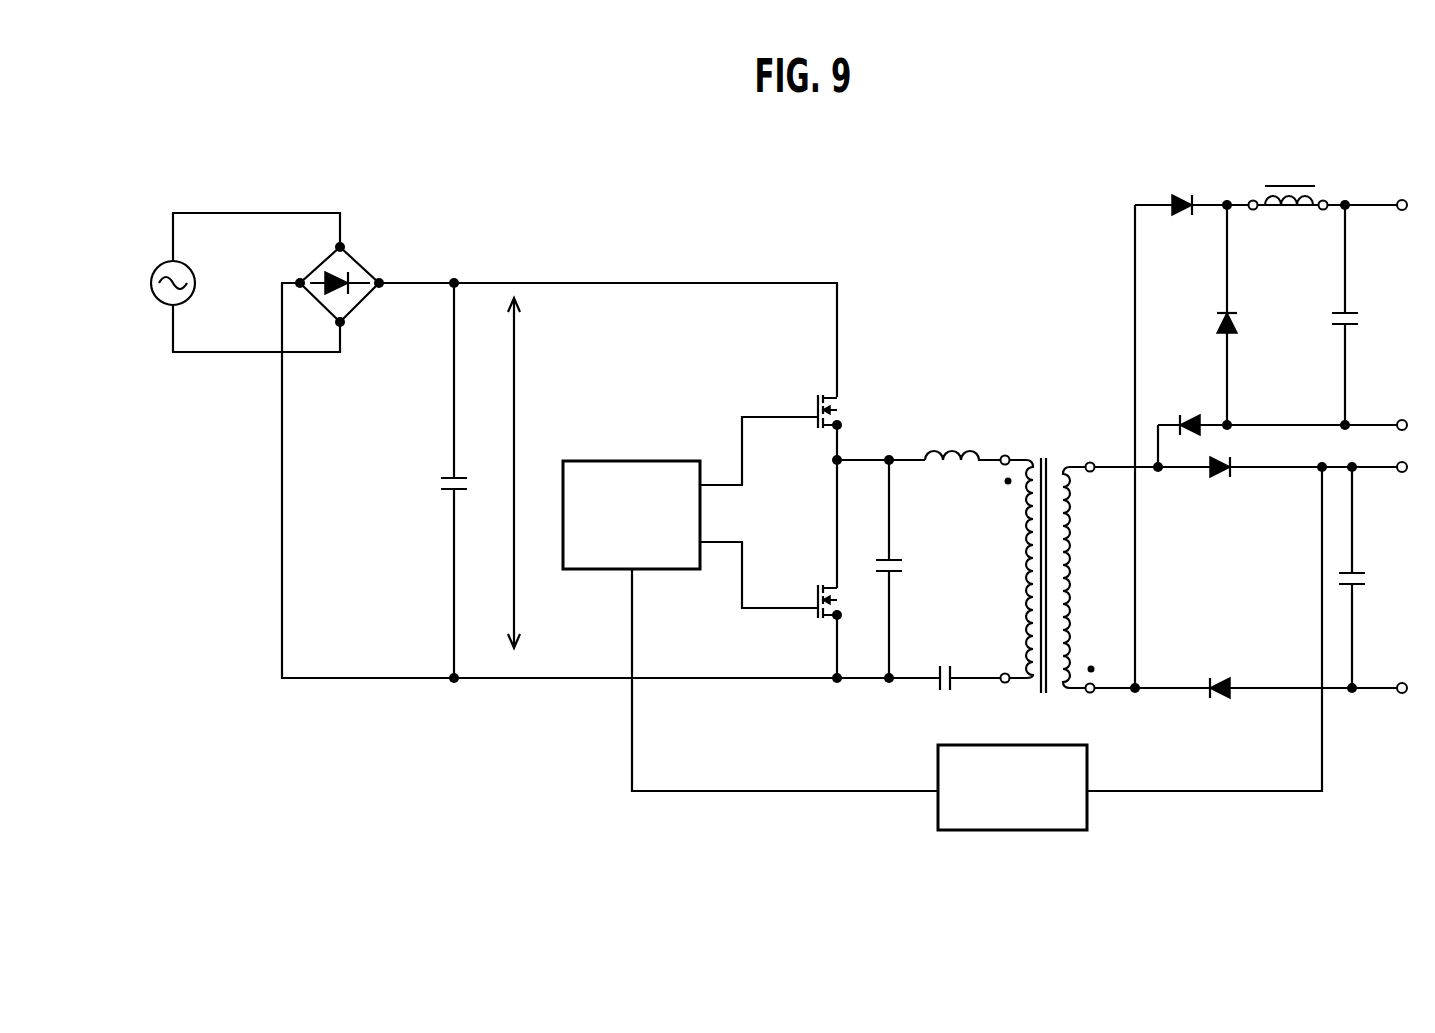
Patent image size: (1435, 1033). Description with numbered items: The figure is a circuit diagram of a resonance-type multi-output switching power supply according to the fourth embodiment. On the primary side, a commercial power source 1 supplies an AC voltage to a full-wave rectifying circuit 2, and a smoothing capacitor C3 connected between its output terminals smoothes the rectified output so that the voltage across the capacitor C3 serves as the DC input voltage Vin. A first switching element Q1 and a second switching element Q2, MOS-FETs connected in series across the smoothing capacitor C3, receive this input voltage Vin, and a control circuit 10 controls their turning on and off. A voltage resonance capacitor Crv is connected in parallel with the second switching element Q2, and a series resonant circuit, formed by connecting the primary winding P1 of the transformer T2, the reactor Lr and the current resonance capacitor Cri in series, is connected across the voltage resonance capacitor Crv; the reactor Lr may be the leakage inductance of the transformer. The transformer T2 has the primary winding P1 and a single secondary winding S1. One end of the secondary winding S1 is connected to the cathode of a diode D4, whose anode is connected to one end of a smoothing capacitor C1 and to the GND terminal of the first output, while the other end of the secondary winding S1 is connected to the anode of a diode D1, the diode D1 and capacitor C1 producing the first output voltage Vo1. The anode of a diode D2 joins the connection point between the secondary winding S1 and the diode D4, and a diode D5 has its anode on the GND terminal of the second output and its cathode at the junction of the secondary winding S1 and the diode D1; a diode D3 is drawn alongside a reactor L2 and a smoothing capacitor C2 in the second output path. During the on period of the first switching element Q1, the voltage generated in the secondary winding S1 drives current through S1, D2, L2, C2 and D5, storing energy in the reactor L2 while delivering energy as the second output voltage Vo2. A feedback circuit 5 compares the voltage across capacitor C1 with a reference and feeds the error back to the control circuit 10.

The commercial power source 1 is at (151, 285).
The full-wave rectifying circuit 2 is at (360, 262).
The control circuit 10 is at (626, 461).
The feedback circuit 5 is at (1090, 808).
The smoothing capacitor C3 is at (471, 489).
The DC input voltage Vin is at (531, 473).
The first switching element Q1 is at (845, 412).
The second switching element Q2 is at (845, 605).
The voltage resonance capacitor Crv is at (911, 564).
The current resonance capacitor Cri is at (944, 696).
The reactor Lr is at (952, 437).
The transformer T2 is at (1048, 560).
The primary winding P1 is at (985, 575).
The secondary winding S1 is at (1108, 575).
The diode D1 is at (1221, 483).
The diode D2 is at (1182, 189).
The diode D3 is at (1246, 324).
The diode D4 is at (1224, 673).
The diode D5 is at (1189, 410).
The smoothing capacitor C1 is at (1369, 583).
The smoothing capacitor C2 is at (1363, 324).
The reactor L2 is at (1288, 220).
The first output voltage Vo1 is at (1405, 488).
The second output voltage Vo2 is at (1405, 178).
The GND terminal GND is at (1402, 535).